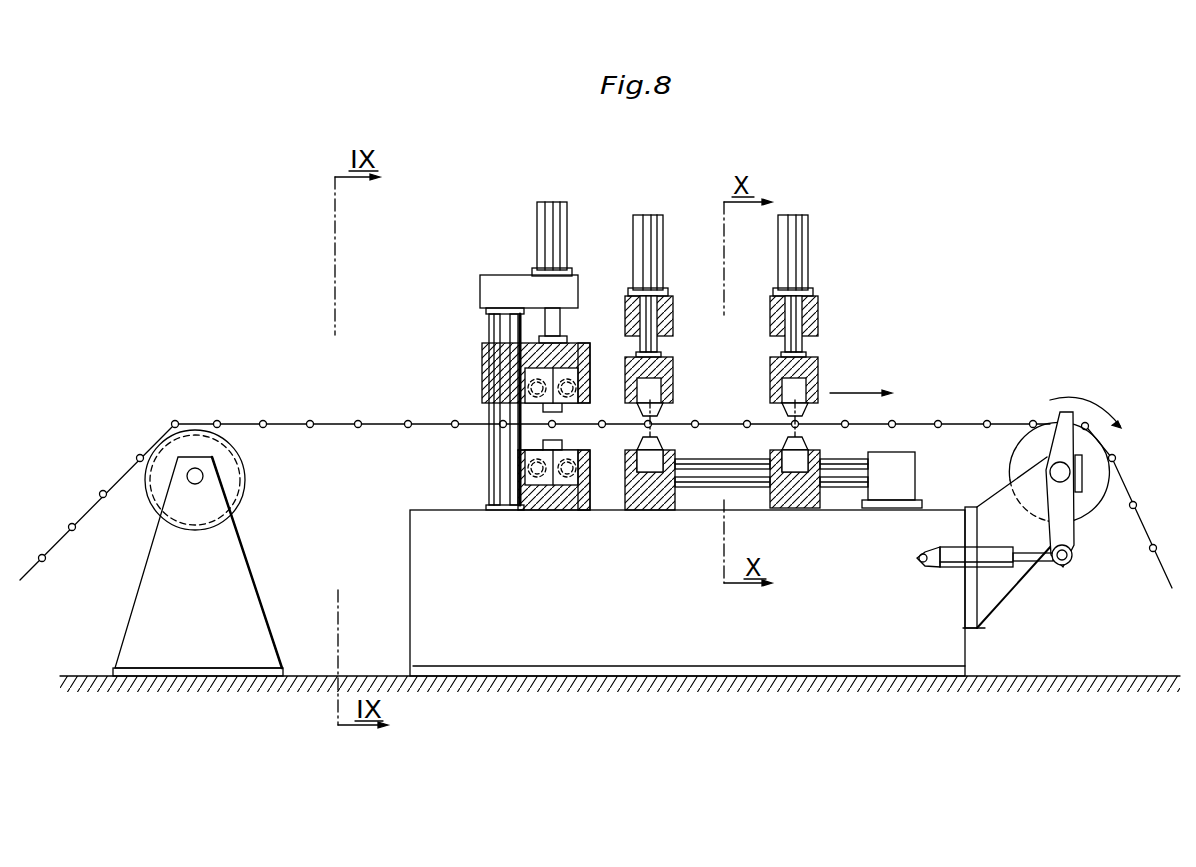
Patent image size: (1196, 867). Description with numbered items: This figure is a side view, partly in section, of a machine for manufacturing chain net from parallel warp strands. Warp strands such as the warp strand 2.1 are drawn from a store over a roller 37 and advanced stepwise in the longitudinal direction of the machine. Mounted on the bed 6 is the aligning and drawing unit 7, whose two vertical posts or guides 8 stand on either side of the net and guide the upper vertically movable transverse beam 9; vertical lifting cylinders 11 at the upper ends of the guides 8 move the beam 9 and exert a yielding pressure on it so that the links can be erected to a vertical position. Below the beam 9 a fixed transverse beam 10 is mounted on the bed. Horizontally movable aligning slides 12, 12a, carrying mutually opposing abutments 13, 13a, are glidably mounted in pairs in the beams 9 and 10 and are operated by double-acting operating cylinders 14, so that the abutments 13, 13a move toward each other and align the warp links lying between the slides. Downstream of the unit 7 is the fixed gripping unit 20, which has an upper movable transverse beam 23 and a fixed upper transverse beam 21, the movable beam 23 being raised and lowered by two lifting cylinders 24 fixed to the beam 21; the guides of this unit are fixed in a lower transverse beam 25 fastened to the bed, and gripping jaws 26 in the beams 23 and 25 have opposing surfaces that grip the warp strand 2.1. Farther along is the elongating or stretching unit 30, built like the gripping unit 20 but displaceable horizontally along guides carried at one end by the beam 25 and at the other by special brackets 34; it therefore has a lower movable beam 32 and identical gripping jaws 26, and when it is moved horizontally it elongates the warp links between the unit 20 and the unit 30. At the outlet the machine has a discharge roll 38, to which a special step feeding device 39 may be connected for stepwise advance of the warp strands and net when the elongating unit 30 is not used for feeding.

The warp strand 2.1 is at (292, 420).
The bed 6 is at (626, 622).
The aligning and drawing unit 7 is at (466, 261).
The posts or guides 8 is at (497, 483).
The upper vertically movable transverse beam 9 is at (492, 355).
The fixed transverse beam 10 is at (549, 500).
The vertical lifting cylinders 11 is at (543, 228).
The aligning slide 12 is at (577, 345).
The aligning slide 12a is at (526, 388).
The abutment 13 is at (560, 443).
The abutment 13a is at (530, 445).
The double-acting operating cylinders 14 is at (570, 388).
The fixed gripping unit 20 is at (643, 199).
The fixed upper transverse beam 21 is at (674, 303).
The upper movable transverse beam 23 is at (673, 358).
The lifting cylinders 24 is at (655, 258).
The lower transverse beam 25 is at (660, 505).
The gripping jaws 26 is at (656, 393).
The elongating or stretching unit 30 is at (818, 201).
The lower movable beam 32 is at (808, 508).
The brackets 34 is at (912, 478).
The roller 37 is at (244, 486).
The discharge roll 38 is at (1100, 478).
The step feeding device 39 is at (1032, 577).